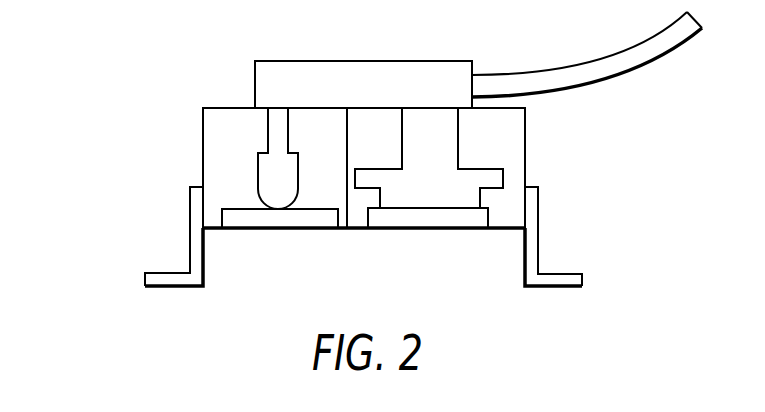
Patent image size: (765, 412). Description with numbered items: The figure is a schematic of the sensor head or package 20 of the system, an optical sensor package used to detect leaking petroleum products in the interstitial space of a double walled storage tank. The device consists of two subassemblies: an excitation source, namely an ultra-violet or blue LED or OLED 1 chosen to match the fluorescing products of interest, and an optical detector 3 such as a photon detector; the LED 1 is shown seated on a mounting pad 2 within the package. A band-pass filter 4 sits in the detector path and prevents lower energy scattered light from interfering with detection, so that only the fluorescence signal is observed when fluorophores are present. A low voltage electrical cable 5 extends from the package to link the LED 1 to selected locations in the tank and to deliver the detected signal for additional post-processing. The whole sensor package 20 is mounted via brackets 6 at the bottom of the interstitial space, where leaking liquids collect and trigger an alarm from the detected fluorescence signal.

The sensor package 20 is at (132, 137).
The LED or OLED 1 is at (262, 158).
The first mounting pad 2 is at (280, 206).
The optical detector 3 is at (429, 158).
The band-pass filter 4 is at (442, 212).
The low voltage electrical cable 5 is at (587, 52).
The brackets 6 is at (363, 236).